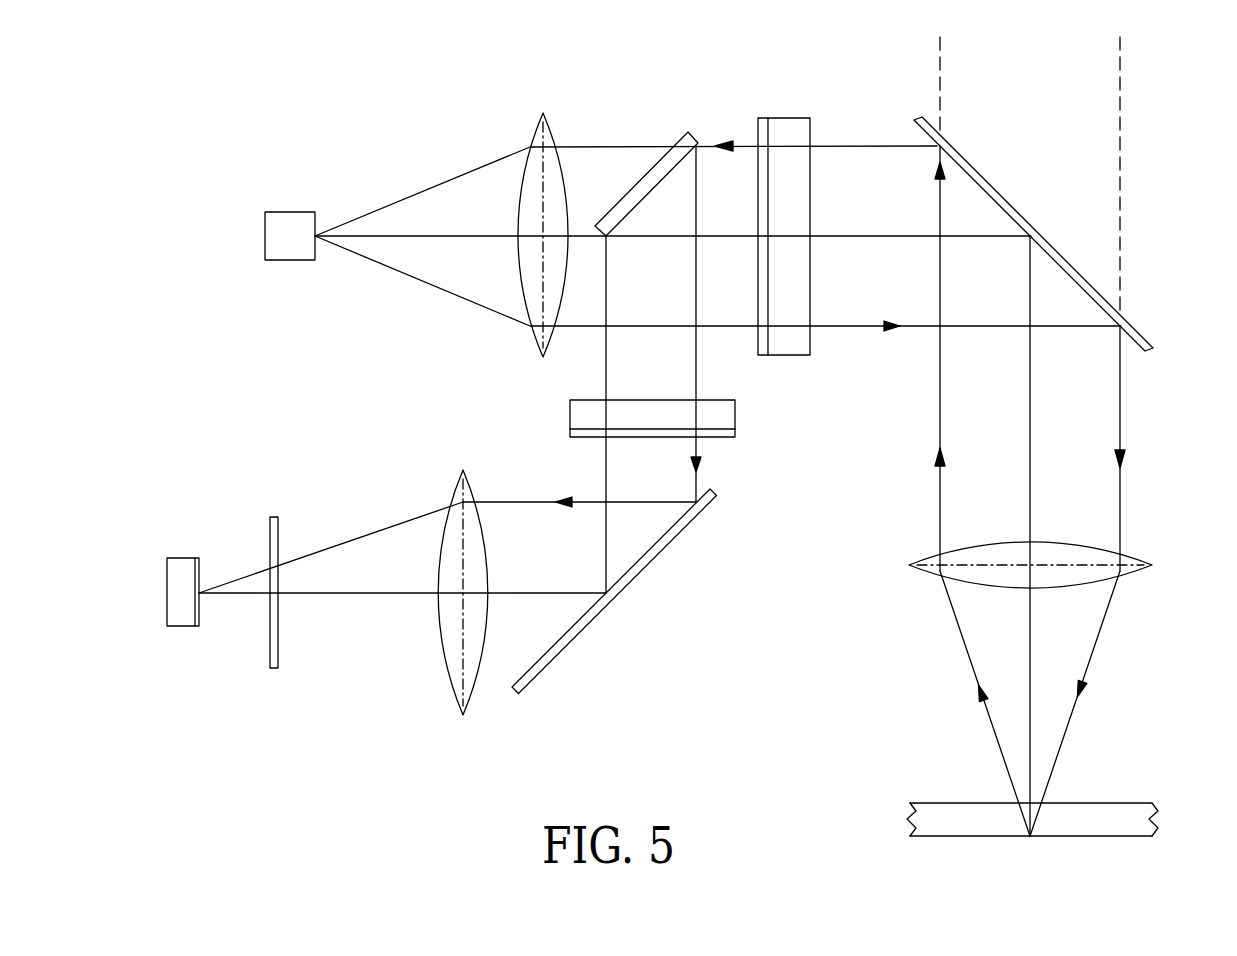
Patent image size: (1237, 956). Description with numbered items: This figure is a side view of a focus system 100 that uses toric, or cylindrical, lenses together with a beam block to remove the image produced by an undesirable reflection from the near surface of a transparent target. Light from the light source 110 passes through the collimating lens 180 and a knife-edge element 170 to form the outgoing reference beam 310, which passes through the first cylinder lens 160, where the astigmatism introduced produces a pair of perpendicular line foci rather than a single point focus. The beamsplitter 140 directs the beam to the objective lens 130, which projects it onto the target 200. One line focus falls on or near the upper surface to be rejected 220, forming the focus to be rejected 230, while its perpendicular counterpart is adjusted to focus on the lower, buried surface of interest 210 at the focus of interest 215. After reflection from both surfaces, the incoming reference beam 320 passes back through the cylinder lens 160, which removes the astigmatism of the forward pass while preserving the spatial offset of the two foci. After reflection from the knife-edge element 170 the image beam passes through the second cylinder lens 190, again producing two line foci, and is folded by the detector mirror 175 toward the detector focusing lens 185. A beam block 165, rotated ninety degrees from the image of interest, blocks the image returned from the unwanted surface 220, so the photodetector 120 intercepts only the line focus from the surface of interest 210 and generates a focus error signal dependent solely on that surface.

The focus system 100 is at (822, 541).
The light source 110 is at (290, 262).
The photodetector 120 is at (200, 568).
The objective lens 130 is at (1142, 560).
The beamsplitter 140 is at (1143, 336).
The first cylinder lens 160 is at (810, 345).
The beam block 165 is at (268, 648).
The knife-edge element 170 is at (688, 133).
The detector mirror 175 is at (573, 647).
The collimating lens 180 is at (530, 338).
The detector focusing lens 185 is at (455, 690).
The second cylinder lens 190 is at (735, 418).
The target 200 is at (1001, 831).
The surface of interest 210 is at (1090, 838).
The focus of interest 215 is at (1030, 838).
The surface to be rejected 220 is at (1090, 803).
The focus to be rejected 230 is at (1025, 803).
The outgoing reference beam 310 is at (1122, 417).
The incoming reference beam 320 is at (498, 497).